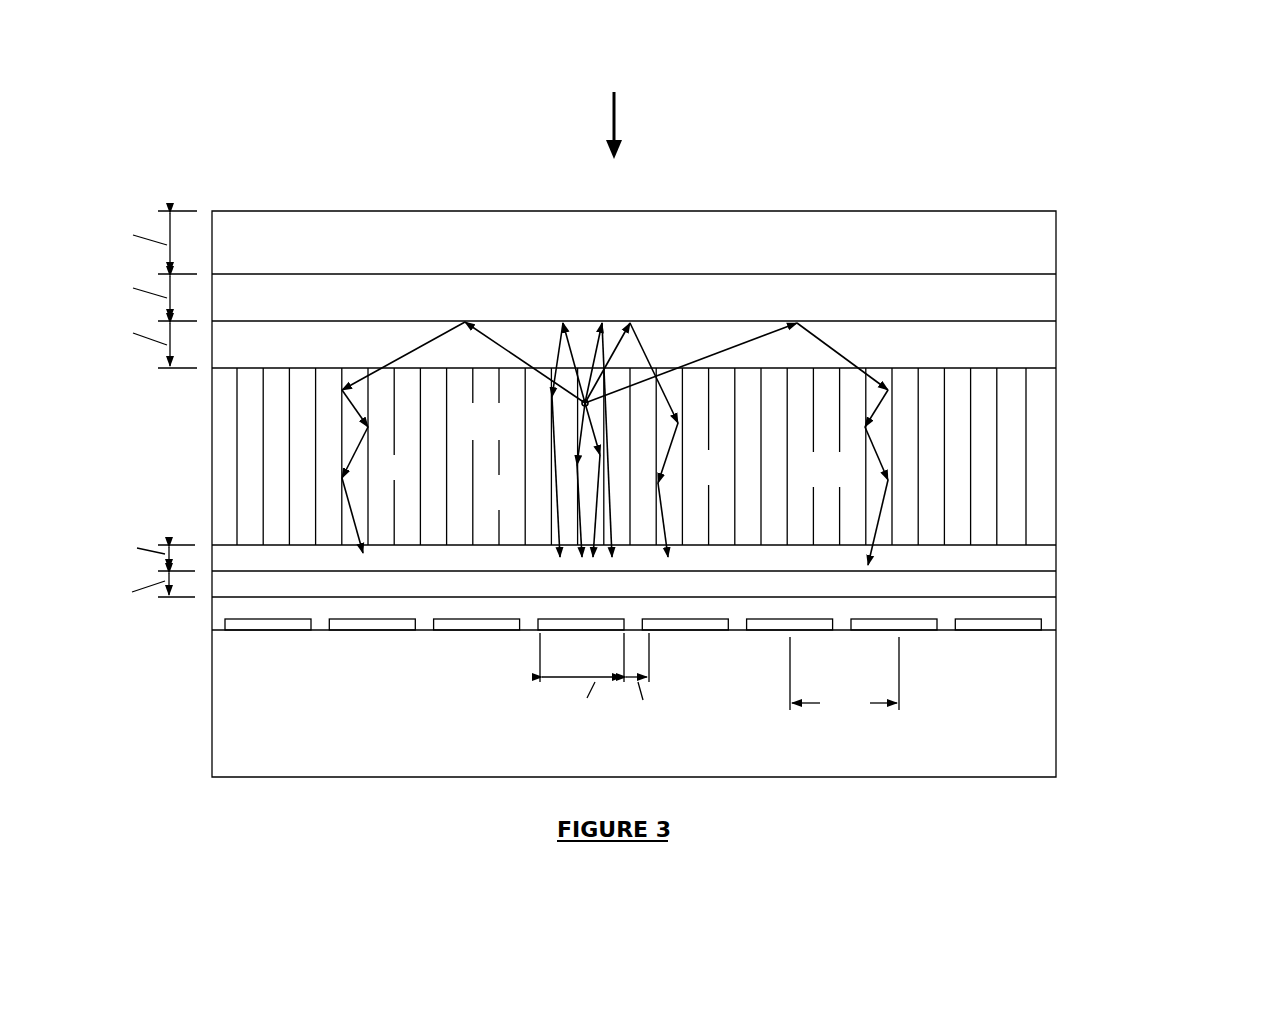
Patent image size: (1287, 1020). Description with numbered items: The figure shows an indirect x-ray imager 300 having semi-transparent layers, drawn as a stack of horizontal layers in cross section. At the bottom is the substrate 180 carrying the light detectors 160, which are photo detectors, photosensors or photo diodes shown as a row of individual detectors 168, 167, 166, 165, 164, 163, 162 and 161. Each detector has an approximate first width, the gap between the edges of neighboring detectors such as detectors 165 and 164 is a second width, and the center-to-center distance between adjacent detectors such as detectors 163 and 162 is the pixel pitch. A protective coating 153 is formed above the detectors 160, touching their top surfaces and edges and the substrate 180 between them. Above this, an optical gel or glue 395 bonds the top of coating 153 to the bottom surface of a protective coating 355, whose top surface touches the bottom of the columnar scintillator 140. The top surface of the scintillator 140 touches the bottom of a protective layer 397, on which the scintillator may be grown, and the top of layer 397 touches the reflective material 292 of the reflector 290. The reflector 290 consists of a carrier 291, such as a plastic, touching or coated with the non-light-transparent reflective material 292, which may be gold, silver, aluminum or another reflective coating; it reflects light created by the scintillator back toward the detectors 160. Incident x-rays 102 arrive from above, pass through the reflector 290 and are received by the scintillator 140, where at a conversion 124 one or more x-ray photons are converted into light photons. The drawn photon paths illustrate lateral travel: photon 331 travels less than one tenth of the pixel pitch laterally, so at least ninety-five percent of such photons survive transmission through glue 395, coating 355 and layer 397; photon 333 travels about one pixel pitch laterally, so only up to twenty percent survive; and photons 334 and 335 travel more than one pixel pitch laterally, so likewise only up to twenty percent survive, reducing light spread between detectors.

The imager 300 is at (1052, 111).
The x-rays 102 is at (614, 125).
The reflector 290 is at (1066, 213).
The carrier 291 is at (1005, 250).
The reflective material 292 is at (958, 297).
The protective layer 397 is at (1003, 340).
The scintillator 140 is at (1033, 455).
The protective coating 355 is at (1025, 563).
The optical gel or glue 395 is at (1058, 588).
The light detectors 160 is at (1060, 617).
The protective coating 153 is at (1015, 617).
The substrate 180 is at (1009, 721).
The conversion 124 is at (582, 404).
The photon 331 is at (555, 482).
The photon 333 is at (668, 458).
The photon 334 is at (352, 520).
The photon 335 is at (877, 458).
The detector 161 is at (998, 627).
The detector 162 is at (920, 625).
The photosensor 163 is at (822, 627).
The detector 164 is at (690, 625).
The detector 165 is at (587, 625).
The detector 166 is at (467, 623).
The detector 167 is at (368, 625).
The detector 168 is at (258, 623).